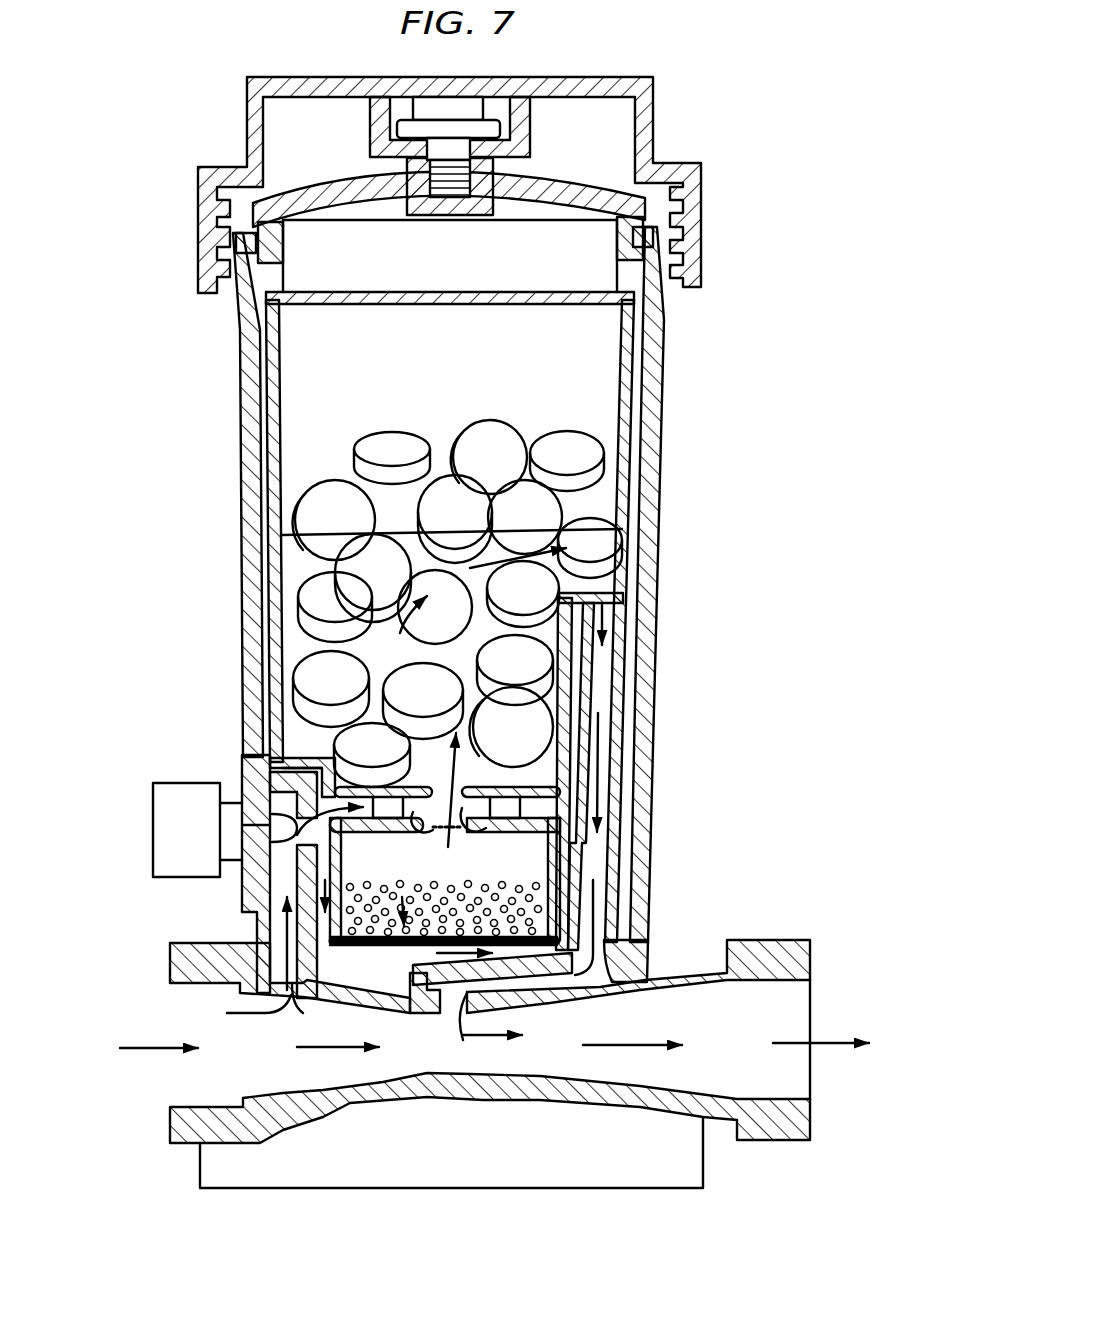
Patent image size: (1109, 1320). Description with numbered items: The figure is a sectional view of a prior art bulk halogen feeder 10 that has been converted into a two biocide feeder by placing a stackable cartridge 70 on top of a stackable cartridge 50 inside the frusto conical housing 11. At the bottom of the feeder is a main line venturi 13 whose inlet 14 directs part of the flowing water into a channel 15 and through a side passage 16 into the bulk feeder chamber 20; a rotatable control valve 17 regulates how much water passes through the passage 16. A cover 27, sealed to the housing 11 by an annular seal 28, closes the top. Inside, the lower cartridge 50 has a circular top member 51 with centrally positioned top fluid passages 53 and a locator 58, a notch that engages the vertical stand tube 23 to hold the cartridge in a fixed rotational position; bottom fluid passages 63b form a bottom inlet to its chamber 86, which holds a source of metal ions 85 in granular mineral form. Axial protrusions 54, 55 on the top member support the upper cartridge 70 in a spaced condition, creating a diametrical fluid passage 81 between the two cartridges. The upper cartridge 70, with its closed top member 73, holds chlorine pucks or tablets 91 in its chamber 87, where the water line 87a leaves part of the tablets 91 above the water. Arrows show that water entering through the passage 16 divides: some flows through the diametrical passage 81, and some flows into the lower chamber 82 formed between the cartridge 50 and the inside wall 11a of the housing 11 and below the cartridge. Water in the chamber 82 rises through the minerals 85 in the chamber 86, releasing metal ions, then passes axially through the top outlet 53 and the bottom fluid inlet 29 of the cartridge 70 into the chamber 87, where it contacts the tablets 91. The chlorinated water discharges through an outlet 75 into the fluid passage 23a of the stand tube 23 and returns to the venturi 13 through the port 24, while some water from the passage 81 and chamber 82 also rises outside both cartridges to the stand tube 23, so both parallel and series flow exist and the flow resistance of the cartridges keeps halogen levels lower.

The bulk halogen feeder 10 is at (746, 164).
The housing 11 is at (647, 460).
The inside wall of housing 11a is at (300, 993).
The venturi 13 is at (187, 1147).
The inlet 14 is at (306, 990).
The channel 15 is at (288, 868).
The passage 16 is at (262, 823).
The control valve 17 is at (187, 800).
The chamber 20 is at (459, 280).
The stand tube 23 is at (625, 615).
The fluid passage 23a is at (600, 657).
The port 24 is at (465, 1033).
The cover 27 is at (257, 128).
The annular seal 28 is at (240, 237).
The fluid inlet 29 is at (378, 693).
The stackable cartridge 50 is at (520, 797).
The top member 51 is at (270, 742).
The top fluid passages 53 is at (452, 838).
The axial protrusion 54 is at (433, 765).
The axial protrusion 55 is at (530, 772).
The locator 58 is at (556, 857).
The fluid passages 63b is at (398, 945).
The stackable cartridge 70 is at (630, 338).
The top member 73 is at (475, 820).
The outlet 75 is at (603, 568).
The diametrical fluid passage 81 is at (467, 803).
The chamber 82 is at (407, 990).
The source of metal ions 85 is at (505, 910).
The chamber 86 is at (514, 876).
The chamber 87 is at (494, 376).
The water line 87a is at (632, 500).
The tablets 91 is at (467, 500).